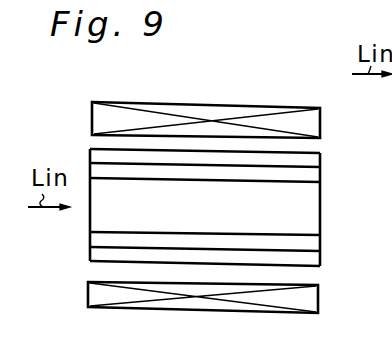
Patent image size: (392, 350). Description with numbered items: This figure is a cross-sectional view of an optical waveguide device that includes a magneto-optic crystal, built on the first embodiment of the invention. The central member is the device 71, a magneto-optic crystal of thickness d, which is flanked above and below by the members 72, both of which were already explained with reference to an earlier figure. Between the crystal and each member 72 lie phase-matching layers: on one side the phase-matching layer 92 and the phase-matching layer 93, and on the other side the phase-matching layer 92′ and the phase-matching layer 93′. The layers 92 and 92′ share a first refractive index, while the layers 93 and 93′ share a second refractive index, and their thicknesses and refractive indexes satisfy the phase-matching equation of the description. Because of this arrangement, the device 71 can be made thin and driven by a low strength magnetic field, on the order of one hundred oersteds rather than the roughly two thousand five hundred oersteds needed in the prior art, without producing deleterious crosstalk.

The device 72 is at (320, 120).
The device 71 is at (320, 215).
The phase-matching layer 93 is at (226, 152).
The phase-matching layer 92 is at (226, 182).
The phase-matching layer 92' is at (228, 247).
The phase-matching layer 93' is at (228, 270).